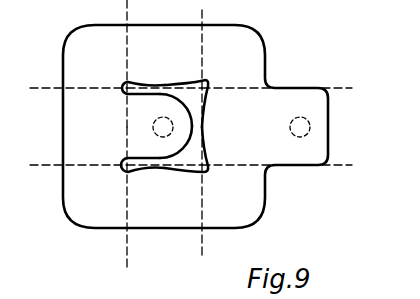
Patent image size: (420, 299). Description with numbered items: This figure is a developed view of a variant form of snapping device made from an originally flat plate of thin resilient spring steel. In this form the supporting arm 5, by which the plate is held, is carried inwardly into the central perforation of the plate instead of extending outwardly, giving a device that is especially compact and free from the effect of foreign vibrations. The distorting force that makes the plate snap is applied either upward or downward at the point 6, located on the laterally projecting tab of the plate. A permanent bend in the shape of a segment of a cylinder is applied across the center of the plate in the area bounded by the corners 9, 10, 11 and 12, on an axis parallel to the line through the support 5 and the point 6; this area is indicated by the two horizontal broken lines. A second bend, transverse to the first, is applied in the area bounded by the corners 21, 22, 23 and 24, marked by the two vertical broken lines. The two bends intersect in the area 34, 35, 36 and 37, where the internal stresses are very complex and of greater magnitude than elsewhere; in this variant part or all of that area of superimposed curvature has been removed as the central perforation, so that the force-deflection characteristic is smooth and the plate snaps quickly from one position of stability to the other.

The fixed support 5 is at (156, 123).
The force application point 6 is at (310, 126).
The corner of first bend area 9 is at (78, 78).
The corner of first bend area 10 is at (277, 79).
The corner of first bend area 11 is at (277, 178).
The corner of first bend area 12 is at (78, 176).
The corner of second bend area 21 is at (115, 63).
The corner of second bend area 22 is at (214, 66).
The corner of second bend area 23 is at (215, 191).
The corner of second bend area 24 is at (112, 197).
The corner of bend intersection area 34 is at (134, 79).
The corner of bend intersection area 35 is at (194, 95).
The corner of bend intersection area 36 is at (194, 158).
The corner of bend intersection area 37 is at (131, 174).